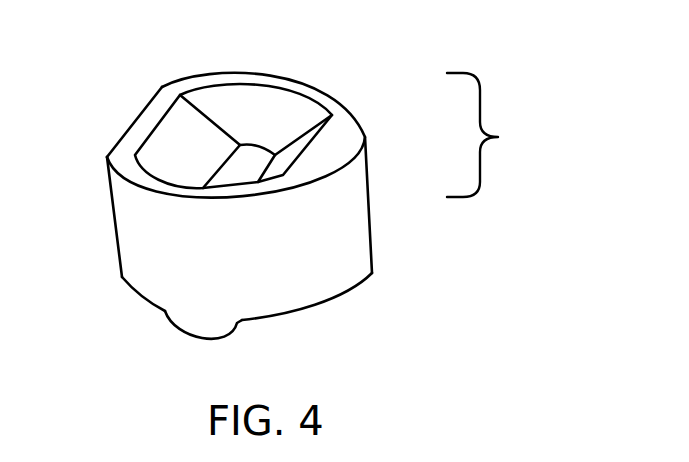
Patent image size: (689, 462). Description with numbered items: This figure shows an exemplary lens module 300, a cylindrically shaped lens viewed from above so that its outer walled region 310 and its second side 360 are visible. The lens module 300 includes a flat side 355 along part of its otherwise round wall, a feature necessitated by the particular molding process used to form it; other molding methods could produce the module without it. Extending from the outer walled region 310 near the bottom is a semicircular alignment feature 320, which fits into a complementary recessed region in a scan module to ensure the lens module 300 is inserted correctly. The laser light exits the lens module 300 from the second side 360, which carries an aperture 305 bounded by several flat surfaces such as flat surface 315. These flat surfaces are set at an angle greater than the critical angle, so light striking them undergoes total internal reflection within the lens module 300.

The lens module 300 is at (253, 268).
The aperture 305 is at (247, 168).
The outer walled region 310 is at (320, 93).
The flat surface 315 is at (213, 152).
The alignment feature 320 is at (183, 337).
The flat side 355 is at (136, 119).
The second side 360 is at (516, 135).